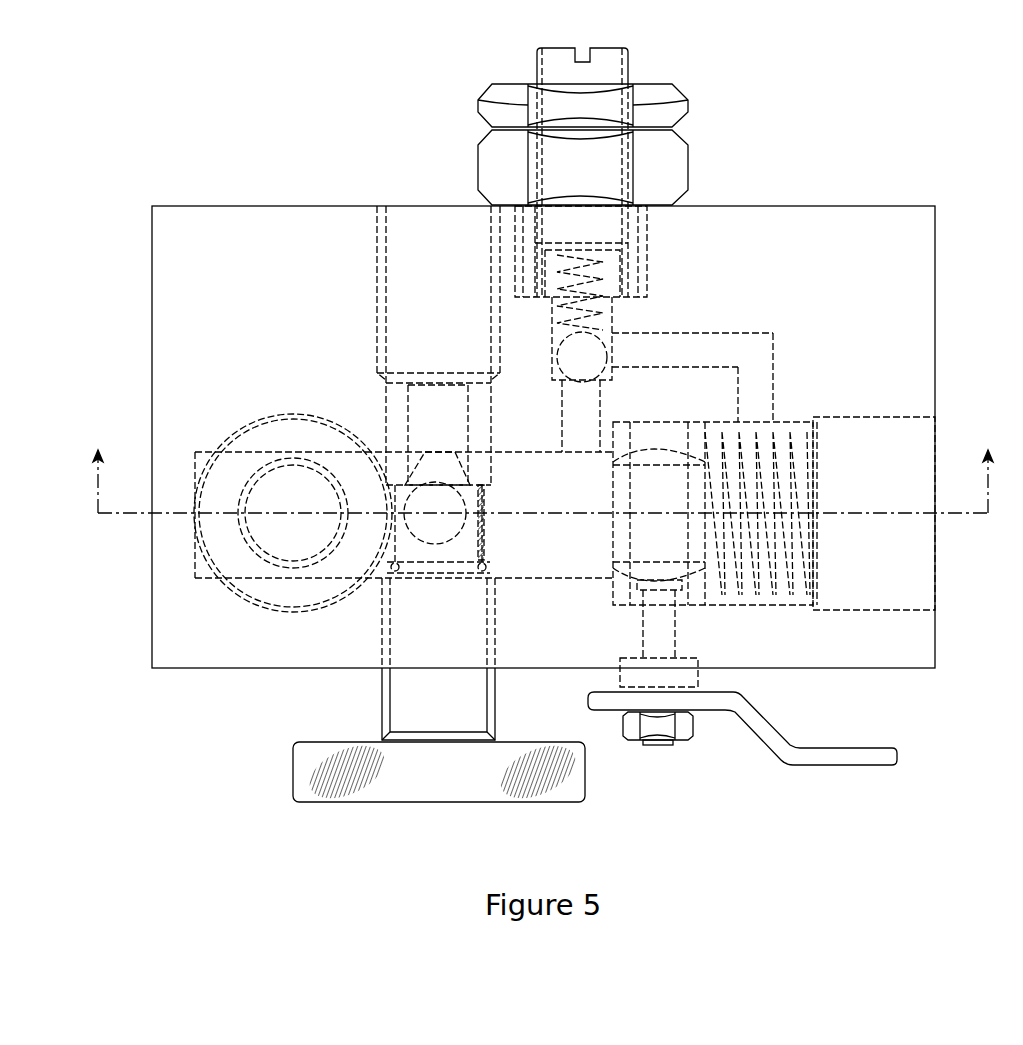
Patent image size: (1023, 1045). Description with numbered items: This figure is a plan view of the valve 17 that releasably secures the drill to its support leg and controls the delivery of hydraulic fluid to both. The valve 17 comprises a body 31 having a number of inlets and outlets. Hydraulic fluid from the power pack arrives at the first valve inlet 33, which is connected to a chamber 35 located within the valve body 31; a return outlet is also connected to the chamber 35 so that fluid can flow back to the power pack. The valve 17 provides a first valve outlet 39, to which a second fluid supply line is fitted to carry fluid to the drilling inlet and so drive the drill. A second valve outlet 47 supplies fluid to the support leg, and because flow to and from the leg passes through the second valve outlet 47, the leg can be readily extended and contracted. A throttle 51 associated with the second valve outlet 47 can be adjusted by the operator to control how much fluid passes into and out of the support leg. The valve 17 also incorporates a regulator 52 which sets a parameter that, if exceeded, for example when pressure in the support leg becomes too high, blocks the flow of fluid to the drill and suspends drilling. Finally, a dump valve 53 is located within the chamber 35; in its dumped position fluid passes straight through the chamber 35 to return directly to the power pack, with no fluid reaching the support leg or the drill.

The valve 17 is at (907, 172).
The body 31 is at (170, 295).
The first valve inlet 33 is at (260, 565).
The chamber 35 is at (555, 545).
The first valve outlet 39 is at (935, 562).
The second valve outlet 47 is at (428, 228).
The throttle 51 is at (365, 802).
The regulator 52 is at (657, 160).
The dump valve 53 is at (840, 755).